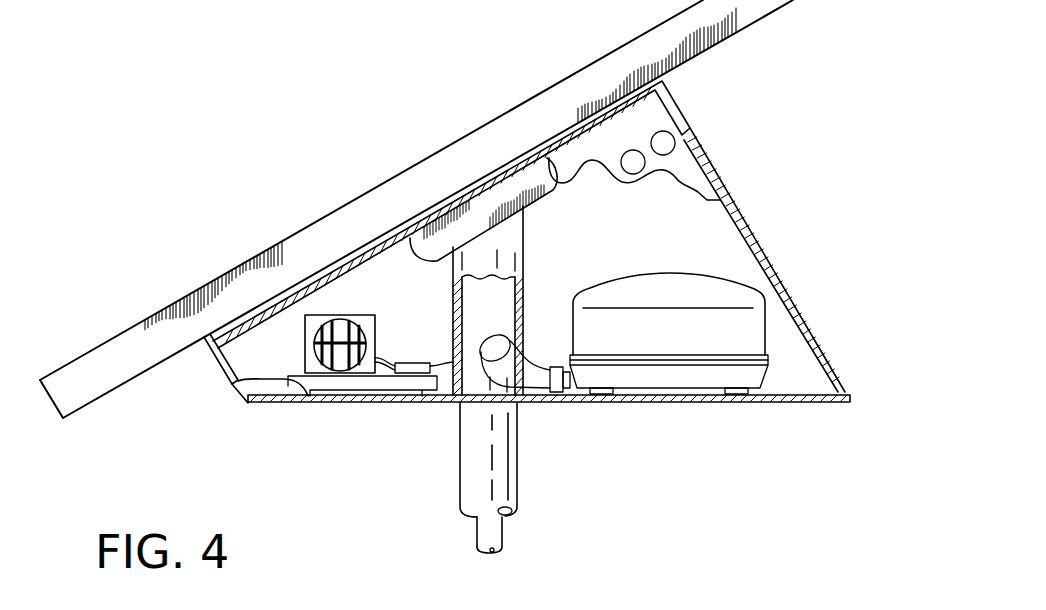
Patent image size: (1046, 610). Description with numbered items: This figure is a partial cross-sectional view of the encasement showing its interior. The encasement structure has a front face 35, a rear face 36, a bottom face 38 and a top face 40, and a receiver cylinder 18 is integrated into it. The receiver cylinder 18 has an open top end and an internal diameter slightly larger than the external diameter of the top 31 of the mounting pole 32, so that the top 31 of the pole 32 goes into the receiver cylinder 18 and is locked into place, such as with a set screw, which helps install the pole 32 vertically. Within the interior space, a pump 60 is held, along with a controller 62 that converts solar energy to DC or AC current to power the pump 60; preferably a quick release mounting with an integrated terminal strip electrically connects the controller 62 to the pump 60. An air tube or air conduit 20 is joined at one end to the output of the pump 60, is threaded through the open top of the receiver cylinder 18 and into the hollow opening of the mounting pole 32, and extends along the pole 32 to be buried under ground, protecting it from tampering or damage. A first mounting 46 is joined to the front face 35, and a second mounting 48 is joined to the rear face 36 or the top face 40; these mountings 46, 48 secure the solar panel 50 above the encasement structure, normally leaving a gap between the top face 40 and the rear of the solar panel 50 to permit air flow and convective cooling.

The receiver cylinder 18 is at (522, 247).
The air tube or air conduit 20 is at (488, 535).
The top of the mounting pole 31 is at (480, 215).
The mounting pole 32 is at (502, 447).
The front face 35 is at (243, 393).
The rear face 36 is at (765, 262).
The bottom face 38 is at (393, 403).
The top face 40 is at (513, 177).
The first mounting 46 is at (210, 360).
The second mounting 48 is at (673, 100).
The solar panel 50 is at (323, 222).
The pump 60 is at (677, 342).
The controller 62 is at (318, 376).